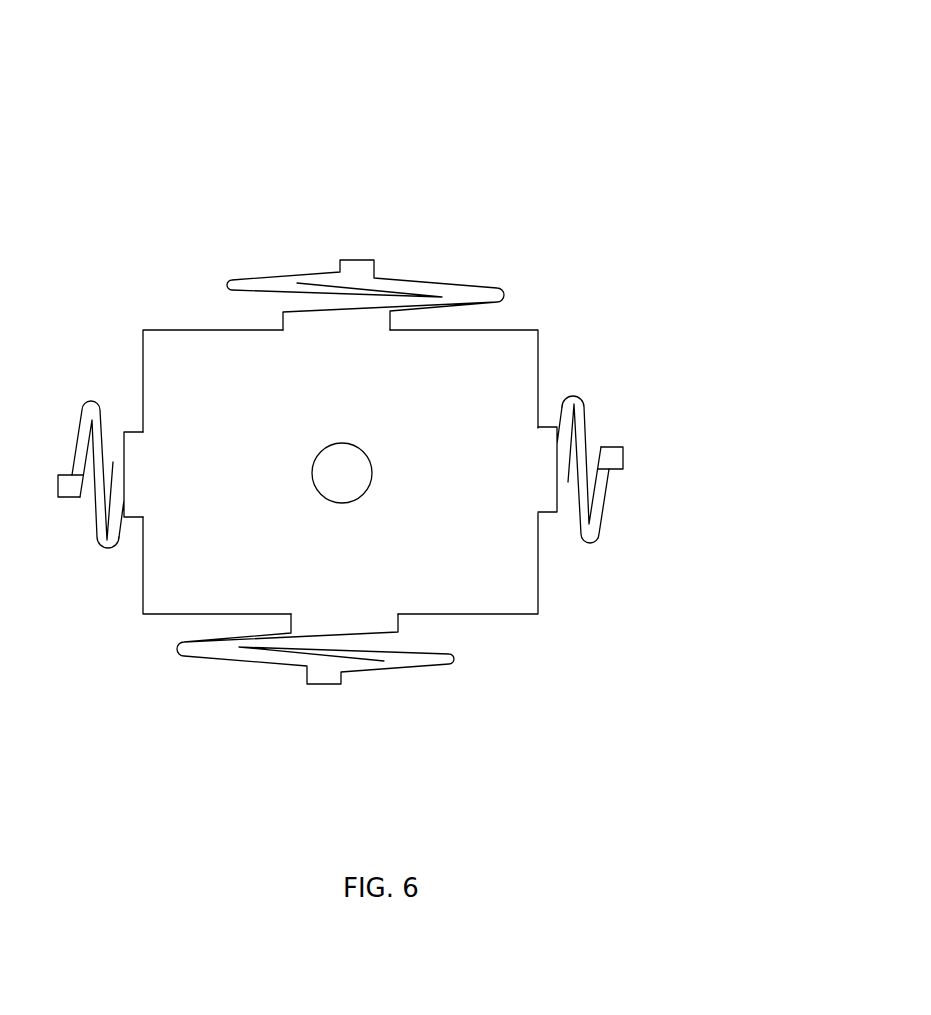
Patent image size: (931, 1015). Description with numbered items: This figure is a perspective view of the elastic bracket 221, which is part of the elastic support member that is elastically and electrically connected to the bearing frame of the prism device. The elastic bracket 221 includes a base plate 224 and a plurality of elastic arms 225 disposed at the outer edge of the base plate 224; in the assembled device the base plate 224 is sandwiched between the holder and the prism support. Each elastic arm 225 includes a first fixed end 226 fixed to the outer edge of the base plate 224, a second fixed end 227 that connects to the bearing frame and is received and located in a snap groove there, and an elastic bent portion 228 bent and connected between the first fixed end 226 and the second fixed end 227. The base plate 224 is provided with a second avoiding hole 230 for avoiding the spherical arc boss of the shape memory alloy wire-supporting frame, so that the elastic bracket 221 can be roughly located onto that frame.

The elastic bracket 221 is at (342, 74).
The base plate 224 is at (165, 605).
The elastic arm 225 is at (435, 472).
The first fixed end 226 is at (547, 430).
The second fixed end 227 is at (665, 445).
The elastic bent portion 228 is at (587, 458).
The second avoiding hole 230 is at (355, 480).